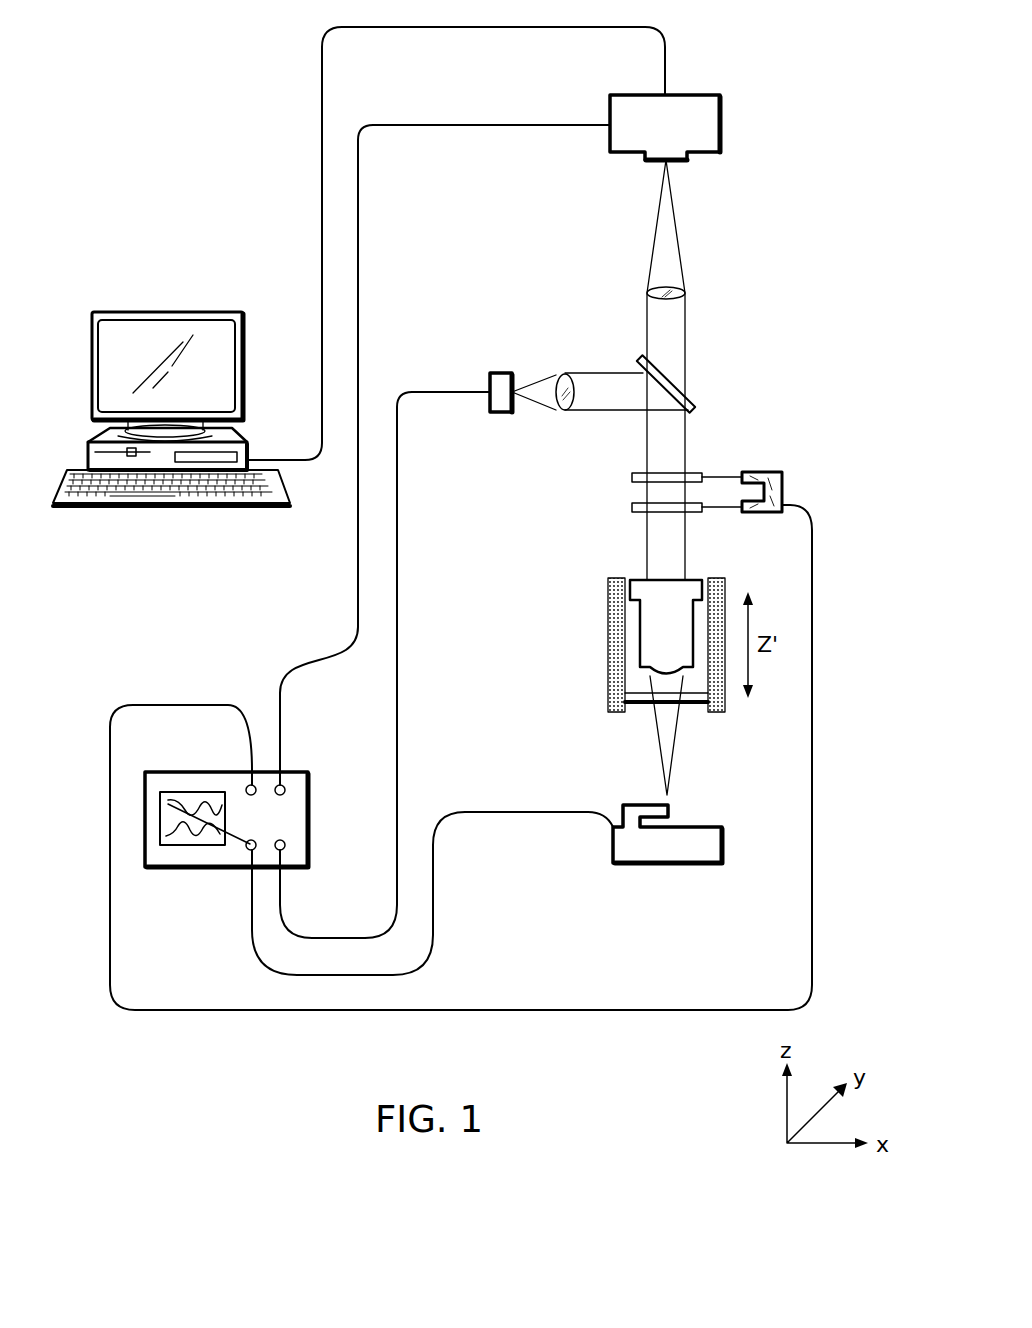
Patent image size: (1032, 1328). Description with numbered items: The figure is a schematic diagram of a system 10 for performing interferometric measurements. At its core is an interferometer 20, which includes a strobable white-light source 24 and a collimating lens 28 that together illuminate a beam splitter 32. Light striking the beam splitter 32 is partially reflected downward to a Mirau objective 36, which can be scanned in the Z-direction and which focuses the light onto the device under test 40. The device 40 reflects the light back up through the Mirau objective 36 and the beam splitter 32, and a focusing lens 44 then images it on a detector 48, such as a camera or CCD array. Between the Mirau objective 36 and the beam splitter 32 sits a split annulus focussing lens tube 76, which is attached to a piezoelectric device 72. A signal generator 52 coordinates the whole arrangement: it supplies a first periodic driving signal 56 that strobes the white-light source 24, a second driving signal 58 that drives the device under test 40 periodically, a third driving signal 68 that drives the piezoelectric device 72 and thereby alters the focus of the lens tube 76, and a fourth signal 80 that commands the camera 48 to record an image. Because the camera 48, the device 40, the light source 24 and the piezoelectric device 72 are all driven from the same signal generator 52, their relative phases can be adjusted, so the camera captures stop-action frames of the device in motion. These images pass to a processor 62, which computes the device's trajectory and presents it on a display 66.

The system 10 is at (170, 122).
The interferometer 20 is at (843, 275).
The strobable white-light source 24 is at (497, 372).
The collimating lens 28 is at (565, 372).
The beam splitter 32 is at (668, 381).
The Mirau objective 36 is at (640, 632).
The device under test 40 is at (724, 840).
The focusing lens 44 is at (690, 293).
The detector 48 is at (722, 125).
The signal generator 52 is at (177, 772).
The first periodic driving signal 56 is at (397, 722).
The second driving signal 58 is at (433, 918).
The processor 62 is at (88, 455).
The display 66 is at (92, 330).
The third driving signal 68 is at (110, 925).
The piezoelectric device 72 is at (784, 482).
The split annulus focussing lens tube 76 is at (630, 508).
The fourth signal 80 is at (358, 565).